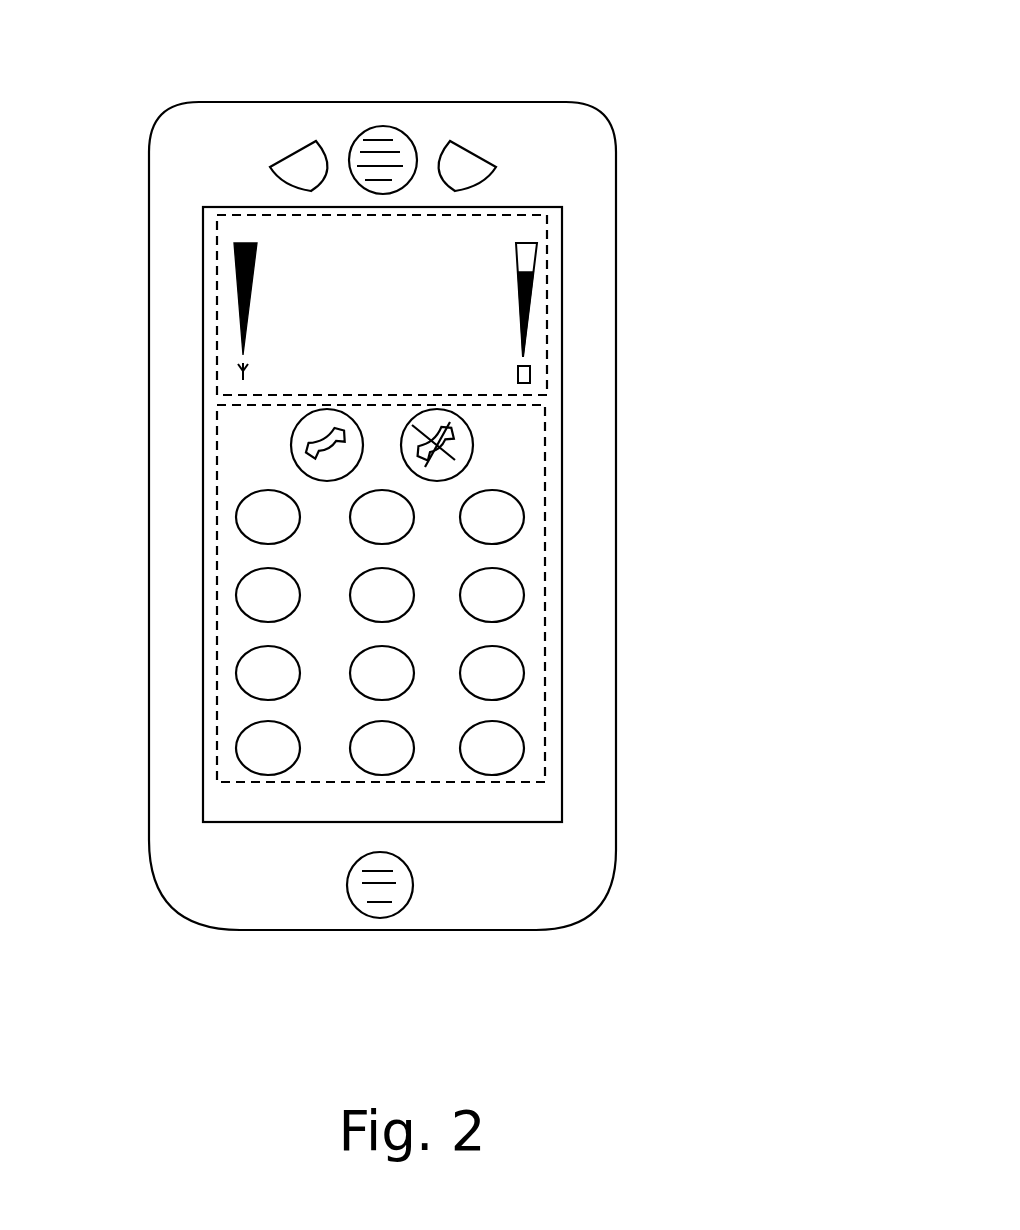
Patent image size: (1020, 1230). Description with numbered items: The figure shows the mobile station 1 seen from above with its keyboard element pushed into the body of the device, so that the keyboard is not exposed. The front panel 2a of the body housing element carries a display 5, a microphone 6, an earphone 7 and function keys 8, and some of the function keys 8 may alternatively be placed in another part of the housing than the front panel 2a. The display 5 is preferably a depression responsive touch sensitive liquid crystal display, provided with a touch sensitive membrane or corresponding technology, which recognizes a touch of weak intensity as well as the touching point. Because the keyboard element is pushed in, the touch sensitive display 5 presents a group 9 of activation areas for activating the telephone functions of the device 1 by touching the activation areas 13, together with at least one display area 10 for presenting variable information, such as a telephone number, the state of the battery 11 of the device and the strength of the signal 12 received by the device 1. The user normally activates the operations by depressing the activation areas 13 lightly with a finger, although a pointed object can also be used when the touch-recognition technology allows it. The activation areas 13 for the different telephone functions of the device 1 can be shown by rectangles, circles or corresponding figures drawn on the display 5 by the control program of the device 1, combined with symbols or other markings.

The mobile station 1 is at (686, 352).
The front panel 2a is at (172, 720).
The display 5 is at (553, 513).
The microphone 6 is at (365, 887).
The earphone 7 is at (370, 162).
The function keys 8 is at (292, 162).
The group of activation areas 9 is at (217, 542).
The display area 10 is at (217, 355).
The battery 11 is at (531, 292).
The signal 12 is at (238, 288).
The activation areas 13 is at (512, 600).